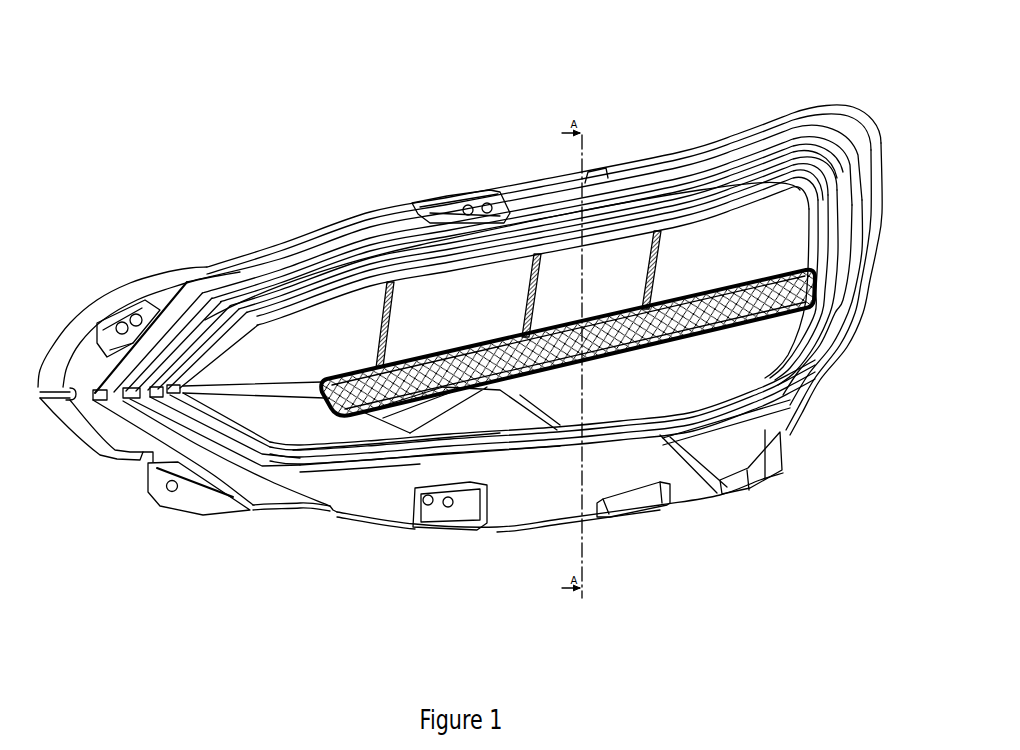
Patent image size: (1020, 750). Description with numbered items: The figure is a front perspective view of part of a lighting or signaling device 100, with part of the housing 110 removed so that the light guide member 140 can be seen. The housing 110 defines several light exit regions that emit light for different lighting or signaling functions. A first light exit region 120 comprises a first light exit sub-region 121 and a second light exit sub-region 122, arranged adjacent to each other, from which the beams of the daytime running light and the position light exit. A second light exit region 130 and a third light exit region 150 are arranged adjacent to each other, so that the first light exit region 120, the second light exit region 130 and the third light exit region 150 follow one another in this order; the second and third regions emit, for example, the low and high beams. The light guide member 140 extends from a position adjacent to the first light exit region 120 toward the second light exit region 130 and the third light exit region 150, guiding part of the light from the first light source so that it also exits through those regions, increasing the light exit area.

The lighting or signaling device 100 is at (511, 40).
The housing 110 is at (333, 257).
The first light exit region 120 is at (90, 600).
The first light exit sub-region 121 is at (277, 341).
The second light exit sub-region 122 is at (289, 414).
The second light exit region 130 is at (473, 310).
The light guide member 140 is at (390, 400).
The third light exit region 150 is at (597, 275).